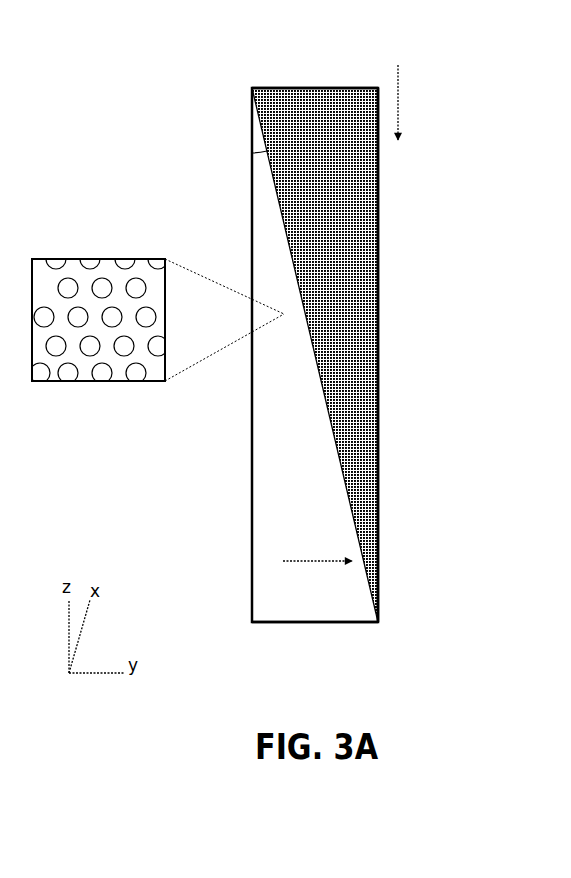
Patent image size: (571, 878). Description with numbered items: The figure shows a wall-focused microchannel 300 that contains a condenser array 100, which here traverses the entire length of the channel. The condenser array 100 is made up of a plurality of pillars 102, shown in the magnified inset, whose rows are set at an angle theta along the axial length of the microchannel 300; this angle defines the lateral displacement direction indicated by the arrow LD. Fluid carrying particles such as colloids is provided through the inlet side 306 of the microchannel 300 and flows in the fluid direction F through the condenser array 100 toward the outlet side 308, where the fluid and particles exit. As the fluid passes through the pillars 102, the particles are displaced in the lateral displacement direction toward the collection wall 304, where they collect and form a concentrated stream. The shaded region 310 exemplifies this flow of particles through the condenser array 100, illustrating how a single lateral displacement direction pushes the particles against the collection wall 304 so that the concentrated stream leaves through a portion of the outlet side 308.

The microchannel 300 is at (310, 352).
The inlet side 306 is at (334, 80).
The outlet side 308 is at (311, 628).
The collection wall 304 is at (383, 280).
The region 310 is at (354, 234).
The condenser array 100 is at (99, 323).
The pillars 102 is at (122, 362).